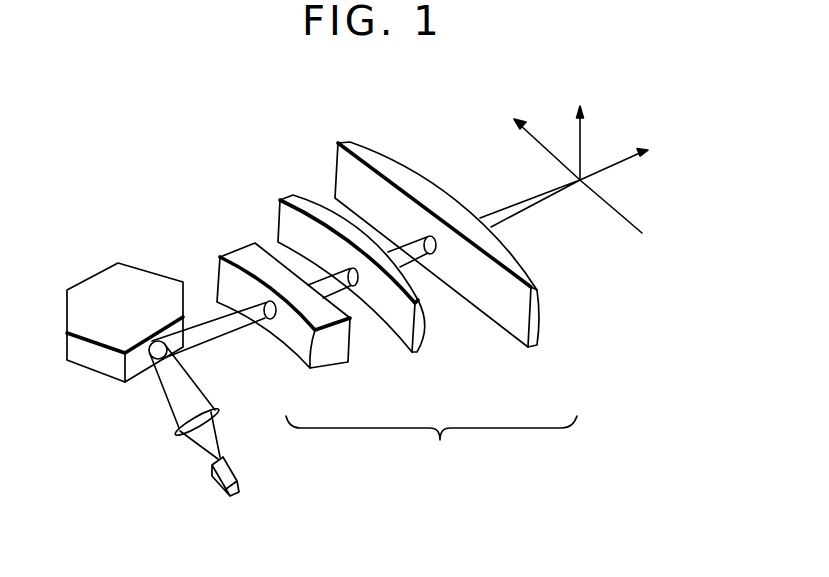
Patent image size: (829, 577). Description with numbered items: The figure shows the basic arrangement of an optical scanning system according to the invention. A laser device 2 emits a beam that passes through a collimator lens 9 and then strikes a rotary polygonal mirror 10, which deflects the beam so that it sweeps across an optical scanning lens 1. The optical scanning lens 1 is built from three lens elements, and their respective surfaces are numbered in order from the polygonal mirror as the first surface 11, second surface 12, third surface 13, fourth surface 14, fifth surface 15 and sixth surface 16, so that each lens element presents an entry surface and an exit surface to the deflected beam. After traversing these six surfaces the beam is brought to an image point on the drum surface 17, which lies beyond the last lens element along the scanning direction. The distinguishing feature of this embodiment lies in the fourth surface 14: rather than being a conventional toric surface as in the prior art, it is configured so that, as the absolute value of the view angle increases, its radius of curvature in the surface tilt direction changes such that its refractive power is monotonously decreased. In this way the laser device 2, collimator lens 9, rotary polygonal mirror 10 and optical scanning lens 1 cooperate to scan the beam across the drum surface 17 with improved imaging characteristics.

The optical scanning lens 1 is at (432, 470).
The laser device 2 is at (223, 491).
The collimator lens 9 is at (177, 430).
The rotary polygonal mirror 10 is at (108, 278).
The first surface 11 is at (312, 345).
The second surface 12 is at (348, 340).
The third surface 13 is at (413, 340).
The fourth surface 14 is at (433, 340).
The fifth surface 15 is at (525, 337).
The sixth surface 16 is at (548, 337).
The drum surface 17 is at (628, 225).